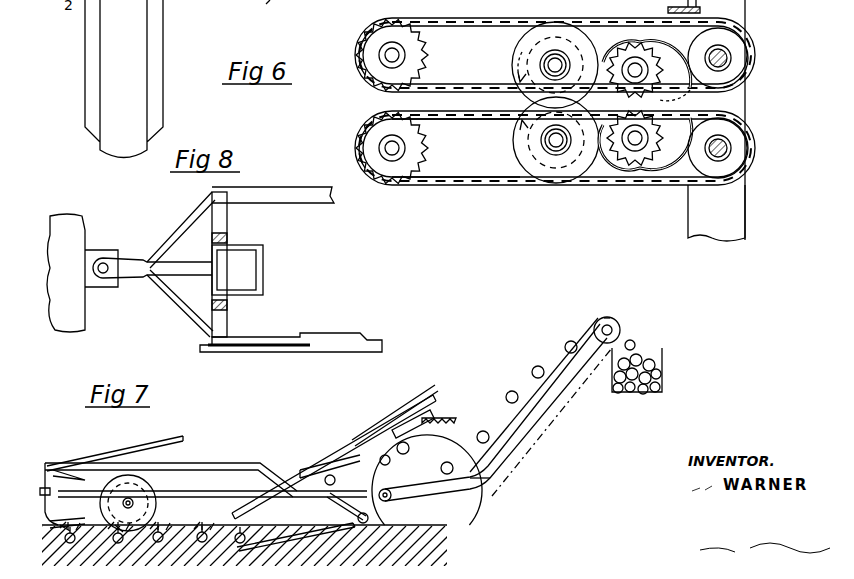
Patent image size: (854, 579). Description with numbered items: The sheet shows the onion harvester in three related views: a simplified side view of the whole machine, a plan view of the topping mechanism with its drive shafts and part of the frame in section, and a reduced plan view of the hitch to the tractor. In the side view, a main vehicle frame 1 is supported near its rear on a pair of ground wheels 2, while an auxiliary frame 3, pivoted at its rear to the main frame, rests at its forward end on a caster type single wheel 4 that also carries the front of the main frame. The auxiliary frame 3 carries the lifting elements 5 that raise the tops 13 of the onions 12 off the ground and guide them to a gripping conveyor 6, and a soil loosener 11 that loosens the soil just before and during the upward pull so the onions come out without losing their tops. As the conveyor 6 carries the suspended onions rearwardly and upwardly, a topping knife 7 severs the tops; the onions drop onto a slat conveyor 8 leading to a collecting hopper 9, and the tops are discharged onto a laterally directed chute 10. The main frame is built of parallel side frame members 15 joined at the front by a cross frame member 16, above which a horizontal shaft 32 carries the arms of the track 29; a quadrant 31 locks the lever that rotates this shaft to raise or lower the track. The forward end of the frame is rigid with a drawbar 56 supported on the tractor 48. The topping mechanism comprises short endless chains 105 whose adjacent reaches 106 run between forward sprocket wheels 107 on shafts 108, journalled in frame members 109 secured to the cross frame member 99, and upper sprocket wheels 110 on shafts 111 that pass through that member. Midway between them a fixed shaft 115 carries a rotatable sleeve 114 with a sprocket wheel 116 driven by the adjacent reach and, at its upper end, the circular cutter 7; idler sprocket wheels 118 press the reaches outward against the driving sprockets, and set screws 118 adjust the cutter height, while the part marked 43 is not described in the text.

In FIG. 7, the main vehicle frame 1 is at (201, 483).
In FIG. 7, the ground wheels 2 is at (472, 436).
In FIG. 7, the auxiliary frame 3 is at (250, 455).
In FIG. 7, the caster type single wheel 4 is at (161, 453).
In FIG. 7, the lifting elements 5 is at (180, 513).
In FIG. 7, the conveyor 6 is at (336, 443).
In FIG. 6, the topping knife 7 is at (515, 44).
In FIG. 8, the topping knife 7 is at (514, 164).
In FIG. 7, the topping knife 7 is at (412, 431).
In FIG. 7, the slat conveyor 8 is at (531, 383).
In FIG. 7, the collecting receptacle or hopper 9 is at (665, 355).
In FIG. 7, the laterally directed chute 10 is at (450, 408).
In FIG. 7, the soil loosener 11 is at (304, 520).
In FIG. 7, the onions 12 is at (96, 515).
In FIG. 7, the onion tops 13 is at (45, 465).
In FIG. 7, the side frame members 15 is at (294, 205).
In FIG. 7, the cross frame member 16 is at (228, 222).
In FIG. 7, the track 29 is at (264, 264).
In FIG. 7, the quadrant 31 is at (240, 340).
In FIG. 7, the horizontal shaft 32 is at (228, 274).
In FIG. 7, the shaft 43 is at (265, 12).
In FIG. 7, the tractor 48 is at (80, 238).
In FIG. 7, the drawbar 56 is at (145, 280).
In FIG. 8, the cross frame member 99 is at (740, 222).
In FIG. 8, the endless chains 105 is at (466, 190).
In FIG. 6, the adjacent reaches 106 is at (455, 80).
In FIG. 8, the adjacent reaches 106 is at (478, 117).
In FIG. 6, the sprocket wheels 107 is at (375, 72).
In FIG. 8, the sprocket wheels 107 is at (382, 174).
In FIG. 6, the shafts 108 is at (390, 55).
In FIG. 8, the shafts 108 is at (390, 148).
In FIG. 6, the frame members 109 is at (668, 88).
In FIG. 8, the frame members 109 is at (466, 175).
In FIG. 6, the sprocket wheels 110 is at (750, 58).
In FIG. 8, the sprocket wheels 110 is at (738, 146).
In FIG. 6, the shafts 111 is at (724, 54).
In FIG. 8, the shafts 111 is at (726, 158).
In FIG. 6, the sleeve 114 is at (547, 49).
In FIG. 8, the sleeve 114 is at (549, 160).
In FIG. 6, the shaft 115 is at (585, 55).
In FIG. 8, the shaft 115 is at (620, 155).
In FIG. 6, the sprocket wheel 116 is at (565, 60).
In FIG. 8, the sprocket wheel 116 is at (566, 150).
In FIG. 6, the idler chain tightening sprocket wheels 118 is at (558, 44).
In FIG. 8, the idler chain tightening sprocket wheels 118 is at (556, 155).